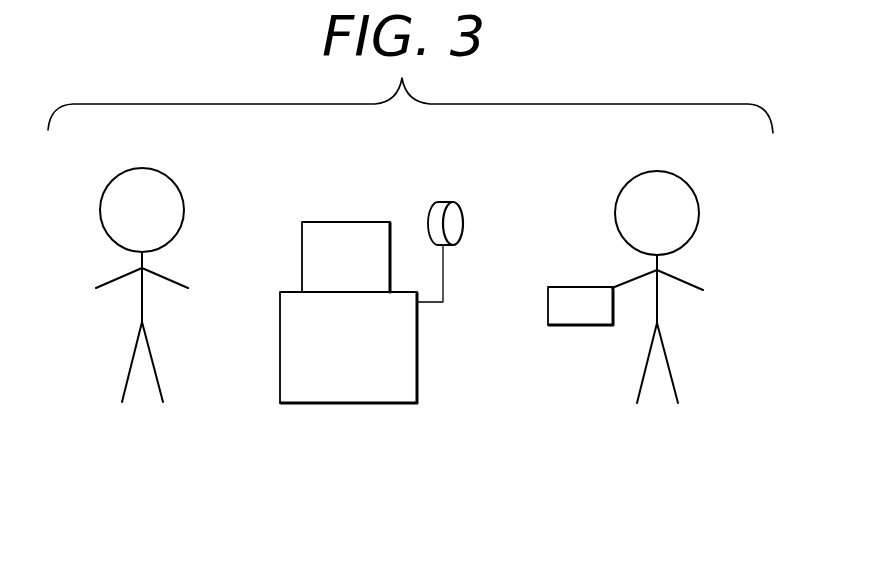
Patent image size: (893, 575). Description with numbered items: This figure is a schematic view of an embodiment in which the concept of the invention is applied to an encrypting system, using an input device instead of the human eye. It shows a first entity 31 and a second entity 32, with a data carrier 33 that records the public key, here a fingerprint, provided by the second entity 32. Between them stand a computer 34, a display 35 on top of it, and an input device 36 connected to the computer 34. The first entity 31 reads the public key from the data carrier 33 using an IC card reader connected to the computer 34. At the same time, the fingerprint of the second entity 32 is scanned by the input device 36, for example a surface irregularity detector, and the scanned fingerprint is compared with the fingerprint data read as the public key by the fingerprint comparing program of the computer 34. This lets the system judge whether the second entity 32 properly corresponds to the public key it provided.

The first entity 31 is at (170, 170).
The second entity 32 is at (683, 174).
The data carrier 33 is at (568, 287).
The computer 34 is at (280, 310).
The display 35 is at (360, 222).
The input device 36 is at (446, 202).